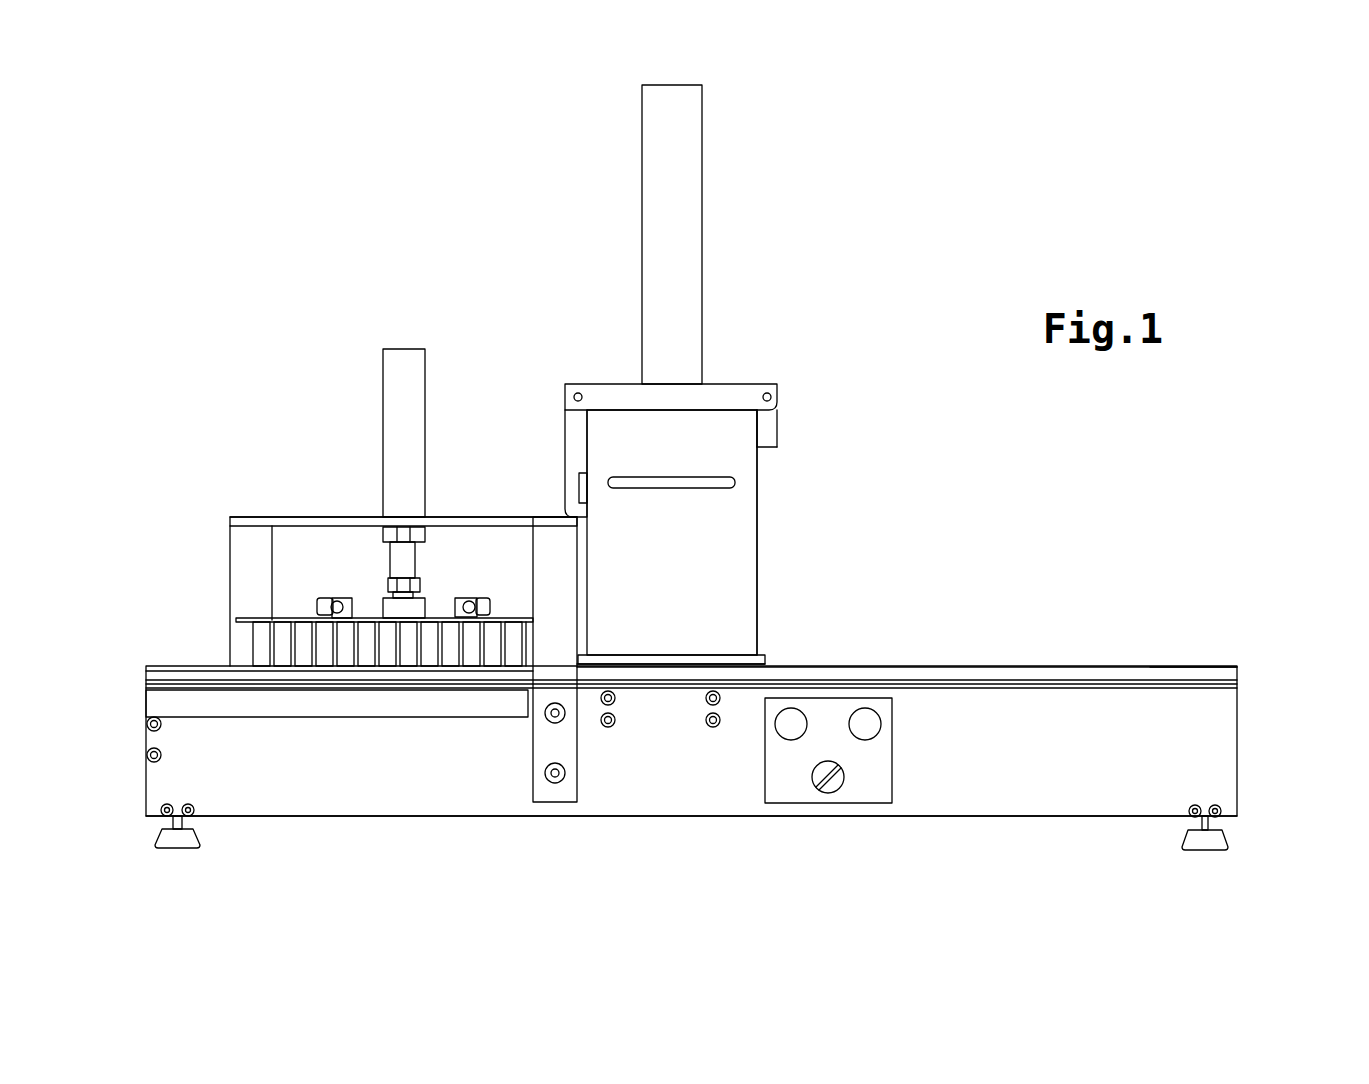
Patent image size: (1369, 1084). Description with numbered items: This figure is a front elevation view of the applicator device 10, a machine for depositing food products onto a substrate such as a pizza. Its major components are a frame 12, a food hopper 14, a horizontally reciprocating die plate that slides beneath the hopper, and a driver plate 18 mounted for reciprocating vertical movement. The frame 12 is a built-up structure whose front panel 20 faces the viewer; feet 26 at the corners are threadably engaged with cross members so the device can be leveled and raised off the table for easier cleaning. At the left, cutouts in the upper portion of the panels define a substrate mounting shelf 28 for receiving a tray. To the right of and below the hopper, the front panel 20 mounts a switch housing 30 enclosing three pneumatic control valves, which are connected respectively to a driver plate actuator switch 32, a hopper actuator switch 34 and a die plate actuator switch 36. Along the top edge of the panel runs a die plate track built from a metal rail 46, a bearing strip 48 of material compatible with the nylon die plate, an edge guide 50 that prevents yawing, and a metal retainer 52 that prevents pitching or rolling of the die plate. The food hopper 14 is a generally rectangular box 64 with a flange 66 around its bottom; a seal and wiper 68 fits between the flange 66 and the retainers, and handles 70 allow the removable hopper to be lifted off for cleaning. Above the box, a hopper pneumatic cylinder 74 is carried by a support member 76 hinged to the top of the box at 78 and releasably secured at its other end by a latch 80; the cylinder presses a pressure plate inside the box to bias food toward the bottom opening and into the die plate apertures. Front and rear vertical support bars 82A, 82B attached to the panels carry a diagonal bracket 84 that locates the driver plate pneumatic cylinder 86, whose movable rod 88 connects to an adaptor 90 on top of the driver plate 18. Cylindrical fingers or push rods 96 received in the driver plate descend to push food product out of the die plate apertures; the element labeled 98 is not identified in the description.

The applicator device 10 is at (767, 834).
The frame 12 is at (841, 818).
The food hopper 14 is at (735, 510).
The driver plate 18 is at (508, 618).
The front panel 20 is at (315, 773).
The feet 26 is at (180, 848).
The substrate mounting shelf 28 is at (230, 714).
The switch housing 30 is at (806, 733).
The driver plate actuator switch 32 is at (892, 803).
The hopper actuator switch 34 is at (838, 790).
The die plate actuator switch 36 is at (893, 722).
The rail 46 is at (1237, 690).
The bearing strip 48 is at (1237, 682).
The edge guide 50 is at (1230, 675).
The retainer 52 is at (905, 668).
The box 64 is at (757, 558).
The flange 66 is at (735, 653).
The seal and wiper 68 is at (768, 665).
The handles 70 is at (645, 483).
The hopper pneumatic cylinder 74 is at (702, 262).
The support member 76 is at (708, 395).
The hinge 78 is at (772, 397).
The latch 80 is at (577, 428).
The front vertical support bar 82A is at (553, 802).
The rear vertical support bar 82B is at (245, 560).
The diagonal bracket 84 is at (333, 516).
The driver plate pneumatic cylinder 86 is at (398, 347).
The movable rod 88 is at (387, 575).
The adaptor 90 is at (380, 597).
The push rods 96 is at (260, 650).
The clamp block 98 is at (470, 600).